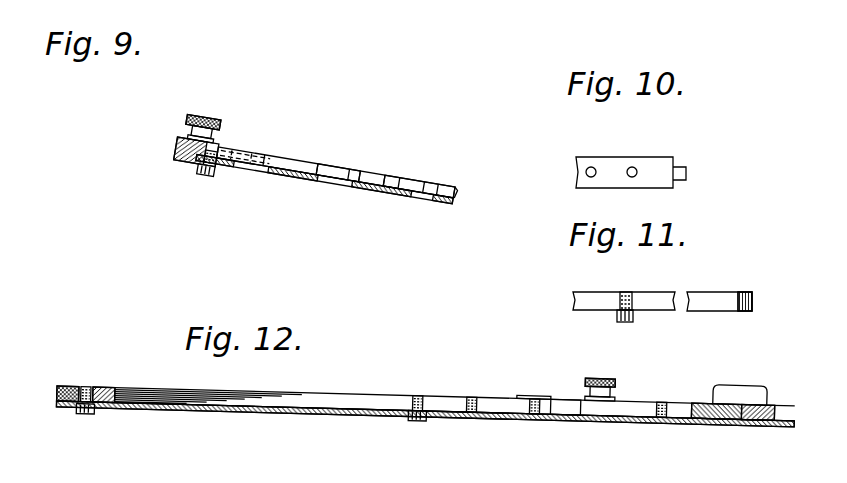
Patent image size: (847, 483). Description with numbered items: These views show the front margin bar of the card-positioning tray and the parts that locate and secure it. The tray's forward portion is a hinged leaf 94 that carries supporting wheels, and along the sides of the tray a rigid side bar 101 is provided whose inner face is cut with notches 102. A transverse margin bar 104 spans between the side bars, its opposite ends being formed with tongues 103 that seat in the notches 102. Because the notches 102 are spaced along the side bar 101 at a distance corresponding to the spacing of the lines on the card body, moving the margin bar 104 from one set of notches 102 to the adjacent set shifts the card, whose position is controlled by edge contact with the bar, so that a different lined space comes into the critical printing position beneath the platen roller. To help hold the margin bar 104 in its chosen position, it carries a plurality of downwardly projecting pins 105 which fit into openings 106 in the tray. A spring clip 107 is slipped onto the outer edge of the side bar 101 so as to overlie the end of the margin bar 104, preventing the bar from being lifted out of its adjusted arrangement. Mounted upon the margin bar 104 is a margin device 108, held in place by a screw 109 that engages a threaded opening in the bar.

In FIG. 9, the leaf 94 is at (300, 187).
In FIG. 9, the side bar 101 is at (378, 173).
In FIG. 12, the side bar 101 is at (740, 424).
In FIG. 9, the notches 102 is at (355, 170).
In FIG. 10, the tongues 103 is at (688, 172).
In FIG. 11, the tongues 103 is at (750, 298).
In FIG. 9, the margin bar 104 is at (176, 146).
In FIG. 10, the margin bar 104 is at (658, 164).
In FIG. 11, the margin bar 104 is at (712, 306).
In FIG. 12, the margin bar 104 is at (387, 396).
In FIG. 9, the pins 105 is at (206, 171).
In FIG. 11, the pins 105 is at (616, 316).
In FIG. 12, the pins 105 is at (420, 423).
In FIG. 9, the openings 106 is at (284, 178).
In FIG. 12, the spring clips 107 is at (746, 400).
In FIG. 9, the margin device 108 is at (250, 152).
In FIG. 12, the margin device 108 is at (548, 398).
In FIG. 9, the screw 109 is at (205, 118).
In FIG. 12, the screw 109 is at (608, 380).